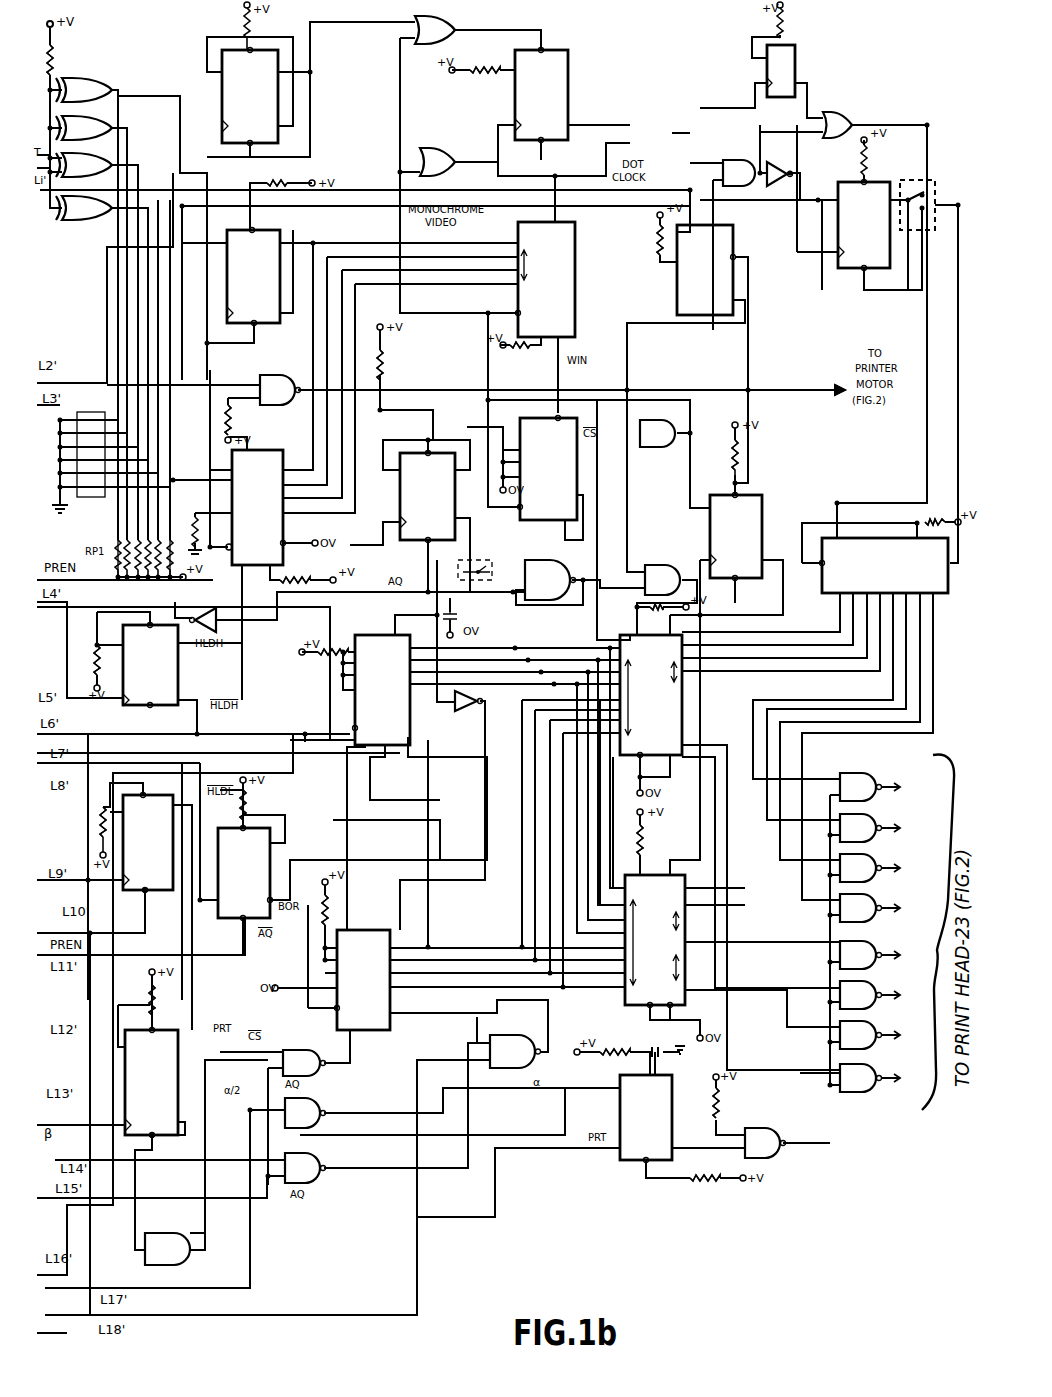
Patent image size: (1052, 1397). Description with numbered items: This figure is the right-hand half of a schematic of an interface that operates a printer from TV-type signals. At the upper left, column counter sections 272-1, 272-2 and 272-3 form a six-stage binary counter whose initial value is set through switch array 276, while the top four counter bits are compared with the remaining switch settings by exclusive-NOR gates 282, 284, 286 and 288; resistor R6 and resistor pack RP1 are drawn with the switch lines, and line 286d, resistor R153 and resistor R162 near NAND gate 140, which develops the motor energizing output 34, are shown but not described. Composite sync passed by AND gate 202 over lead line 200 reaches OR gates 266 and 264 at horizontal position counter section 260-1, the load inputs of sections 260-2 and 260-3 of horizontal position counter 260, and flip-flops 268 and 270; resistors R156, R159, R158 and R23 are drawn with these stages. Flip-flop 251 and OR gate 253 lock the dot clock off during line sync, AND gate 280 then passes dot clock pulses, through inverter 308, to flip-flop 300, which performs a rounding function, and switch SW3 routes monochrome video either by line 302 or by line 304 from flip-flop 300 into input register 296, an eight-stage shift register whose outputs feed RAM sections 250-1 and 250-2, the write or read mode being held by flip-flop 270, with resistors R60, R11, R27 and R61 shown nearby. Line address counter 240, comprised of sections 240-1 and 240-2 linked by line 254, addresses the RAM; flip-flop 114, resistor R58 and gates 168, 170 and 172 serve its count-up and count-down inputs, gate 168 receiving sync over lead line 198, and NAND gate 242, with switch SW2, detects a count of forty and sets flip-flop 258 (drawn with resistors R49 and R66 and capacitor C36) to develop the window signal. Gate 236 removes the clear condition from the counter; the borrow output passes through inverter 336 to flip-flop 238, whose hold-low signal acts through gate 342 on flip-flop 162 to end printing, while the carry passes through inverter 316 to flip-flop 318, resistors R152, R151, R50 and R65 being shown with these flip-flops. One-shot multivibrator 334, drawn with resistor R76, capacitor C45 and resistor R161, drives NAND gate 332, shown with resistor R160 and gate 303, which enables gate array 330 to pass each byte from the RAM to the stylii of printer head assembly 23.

The resistor R6 is at (65, 59).
The exclusive-NOR gate 288 is at (88, 78).
The exclusive-NOR gate 286 is at (106, 116).
The exclusive-NOR gate 284 is at (104, 156).
The exclusive-NOR gate 282 is at (88, 218).
The column counter section 272-1 is at (250, 143).
The column counter section 272-2 is at (185, 308).
The column counter section 272-3 is at (220, 470).
The resistor R153 is at (262, 183).
The OR gate 266 is at (455, 22).
The OR gate 264 is at (440, 138).
The horizontal position counter section 260-1 is at (545, 48).
The resistor R156 is at (480, 80).
The horizontal position counter section 260-2 is at (560, 213).
The bistable flip-flop 268 is at (714, 210).
The resistor R159 is at (640, 240).
The horizontal position counter 260 is at (595, 260).
The flip-flop 251 is at (797, 48).
The OR gate 253 is at (835, 112).
The line 286d is at (727, 108).
The AND gate 280 is at (743, 160).
The inverter 308 is at (772, 186).
The bistable flip-flop 300 is at (812, 198).
The switch SW3 is at (922, 180).
The line 302 is at (910, 262).
The line 304 is at (948, 284).
The printer motor line 34 is at (625, 385).
The NAND gate 140 is at (262, 382).
The resistor R162 is at (248, 420).
The switch array 276 is at (147, 421).
The resistor pack RP1 is at (139, 547).
The resistor R49 is at (296, 572).
The inverter 316 is at (205, 608).
The bistable flip-flop 318 is at (222, 650).
The resistor R152 is at (88, 662).
The resistor R158 is at (401, 365).
The resistor R23 is at (525, 355).
The bistable flip-flop 258 is at (456, 458).
The switch SW2 is at (459, 566).
The horizontal position counter section 260-3 is at (466, 422).
The AND gate 202 is at (657, 433).
The NAND gate 242 is at (550, 580).
The lead line 200 is at (586, 588).
The AND gate 303 is at (662, 580).
The resistor R60 is at (657, 601).
The line address counter section 240-1 is at (398, 617).
The resistor R66 is at (333, 645).
The capacitor C36 is at (460, 615).
The inverter 336 is at (460, 710).
The RAM section 250-1 is at (612, 648).
The bistable flip-flop 270 is at (698, 550).
The resistor R11 is at (752, 455).
The resistor R27 is at (925, 518).
The input register 296 is at (843, 530).
The gate array 330 is at (880, 1100).
The bistable flip-flop 114 is at (82, 880).
The resistor R58 is at (96, 810).
The bistable flip-flop 238 is at (290, 862).
The resistor R50 is at (261, 805).
The line 254 is at (374, 821).
The line address counter 240 is at (405, 796).
The bistable flip-flop 162 is at (113, 1060).
The resistor R151 is at (171, 1000).
The gate 342 is at (167, 1249).
The lead line 198 is at (252, 1288).
The AND gate 168 is at (304, 1063).
The gate 170 is at (305, 1113).
The AND gate 172 is at (305, 1168).
The line address counter section 240-2 is at (335, 1082).
The resistor R65 is at (339, 910).
The AND gate 236 is at (515, 1051).
The one-shot multivibrator 334 is at (612, 1088).
The resistor R76 is at (615, 1044).
The capacitor C45 is at (662, 1045).
The resistor R161 is at (703, 1103).
The NAND gate 332 is at (760, 1128).
The resistor R160 is at (707, 1187).
The RAM section 250-2 is at (714, 1000).
The resistor R61 is at (653, 840).
The printer head assembly 23 is at (938, 932).